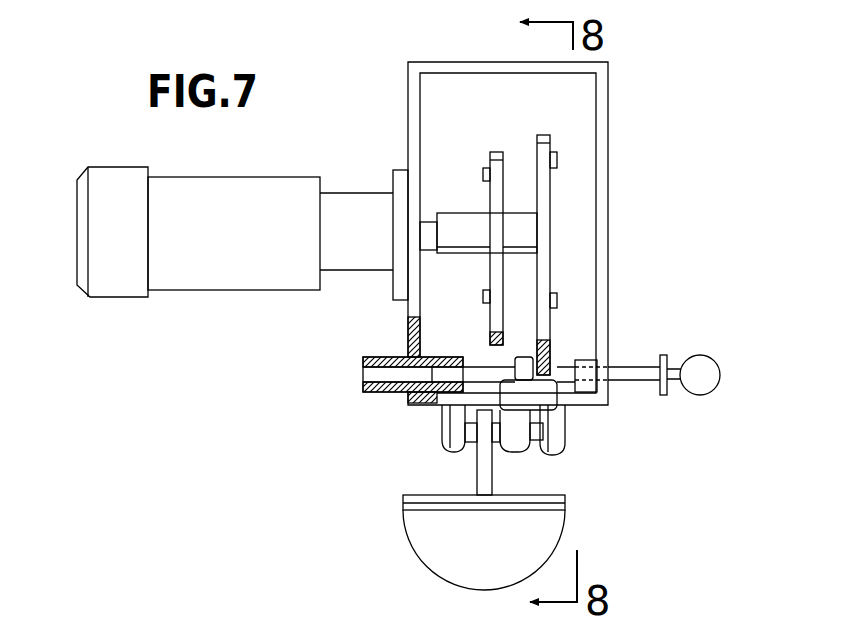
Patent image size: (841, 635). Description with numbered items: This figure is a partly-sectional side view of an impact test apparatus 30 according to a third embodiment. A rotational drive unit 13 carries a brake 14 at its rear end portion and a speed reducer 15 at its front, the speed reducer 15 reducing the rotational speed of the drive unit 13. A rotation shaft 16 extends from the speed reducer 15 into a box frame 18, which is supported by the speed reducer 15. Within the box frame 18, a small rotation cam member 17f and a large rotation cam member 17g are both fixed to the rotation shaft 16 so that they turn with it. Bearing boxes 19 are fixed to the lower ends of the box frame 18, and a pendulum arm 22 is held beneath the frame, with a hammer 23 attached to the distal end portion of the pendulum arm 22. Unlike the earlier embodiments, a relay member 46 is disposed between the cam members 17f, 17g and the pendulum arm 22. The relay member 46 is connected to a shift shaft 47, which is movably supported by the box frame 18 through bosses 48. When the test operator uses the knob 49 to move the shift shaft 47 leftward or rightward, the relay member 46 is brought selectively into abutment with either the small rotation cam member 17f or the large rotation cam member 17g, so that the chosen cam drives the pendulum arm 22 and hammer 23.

The rotational drive unit 13 is at (228, 262).
The brake 14 is at (105, 232).
The speed reducer 15 is at (352, 272).
The rotation shaft 16 is at (430, 222).
The small rotation cam member 17f is at (492, 152).
The large rotation cam member 17g is at (547, 188).
The box frame 18 is at (608, 100).
The bearing boxes 19 is at (450, 440).
The pendulum arm 22 is at (478, 475).
The hammer 23 is at (455, 560).
The impact test apparatus 30 is at (678, 130).
The relay member 46 is at (548, 402).
The shift shaft 47 is at (625, 370).
The bosses 48 is at (363, 387).
The knob 49 is at (718, 385).